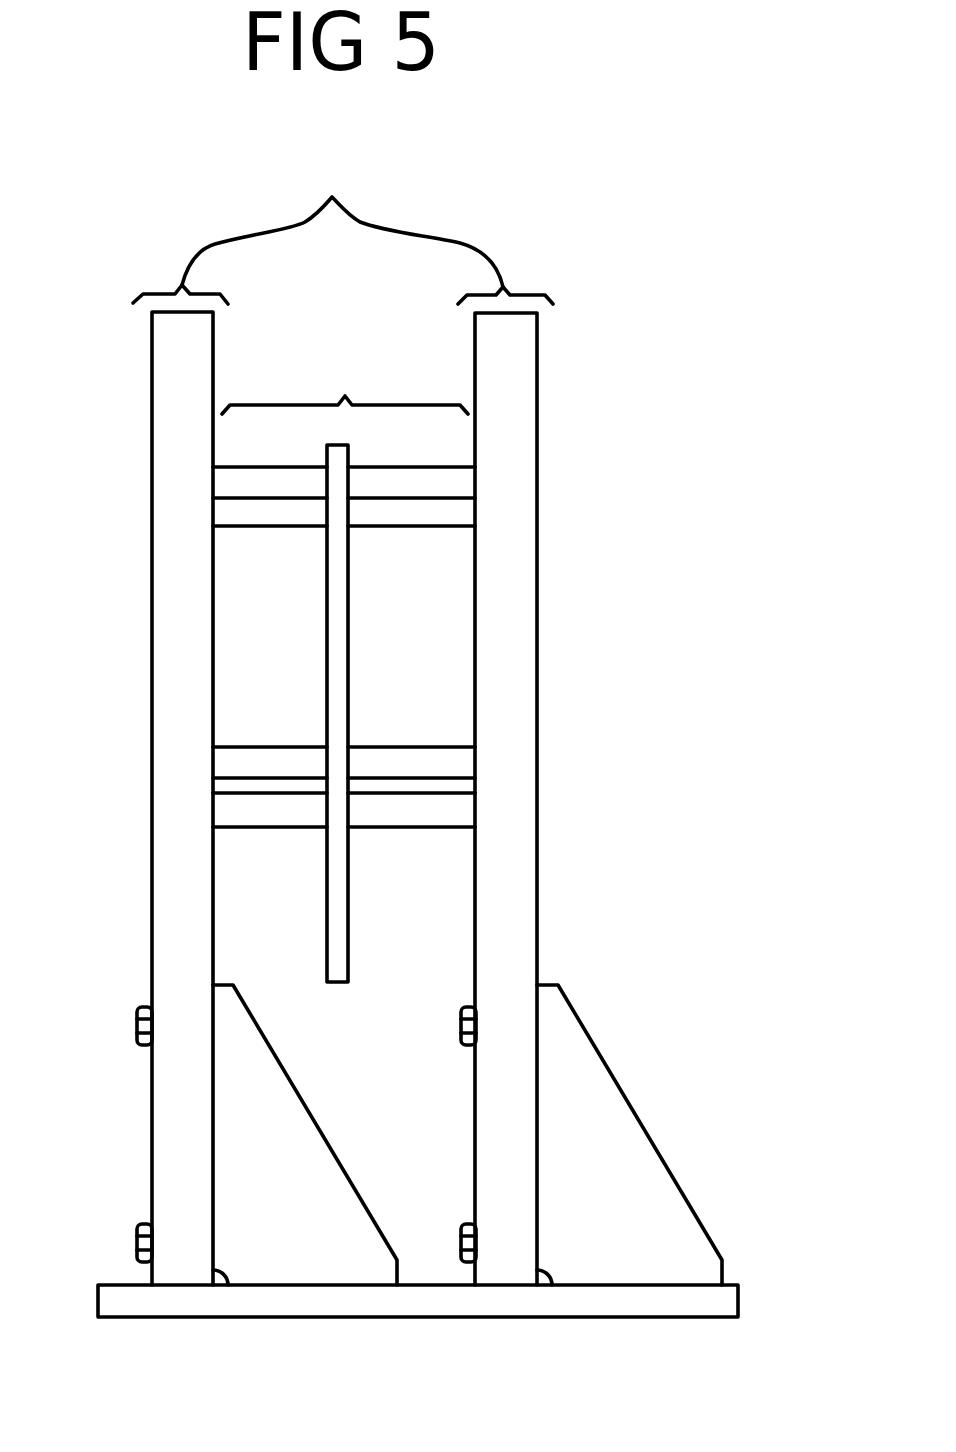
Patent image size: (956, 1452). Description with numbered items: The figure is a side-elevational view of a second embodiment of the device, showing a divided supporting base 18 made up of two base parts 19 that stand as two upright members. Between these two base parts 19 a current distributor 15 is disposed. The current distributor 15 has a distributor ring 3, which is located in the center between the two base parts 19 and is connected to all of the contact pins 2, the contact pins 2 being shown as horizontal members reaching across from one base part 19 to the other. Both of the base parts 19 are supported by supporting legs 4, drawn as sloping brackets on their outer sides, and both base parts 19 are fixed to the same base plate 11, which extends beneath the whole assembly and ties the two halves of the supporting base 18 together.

The contact pins 2 is at (382, 762).
The distributor ring 3 is at (337, 652).
The supporting legs 4 is at (290, 1107).
The base plate 11 is at (727, 1302).
The current distributor 15 is at (345, 372).
The supporting base 18 is at (343, 216).
The base parts 19 is at (175, 630).